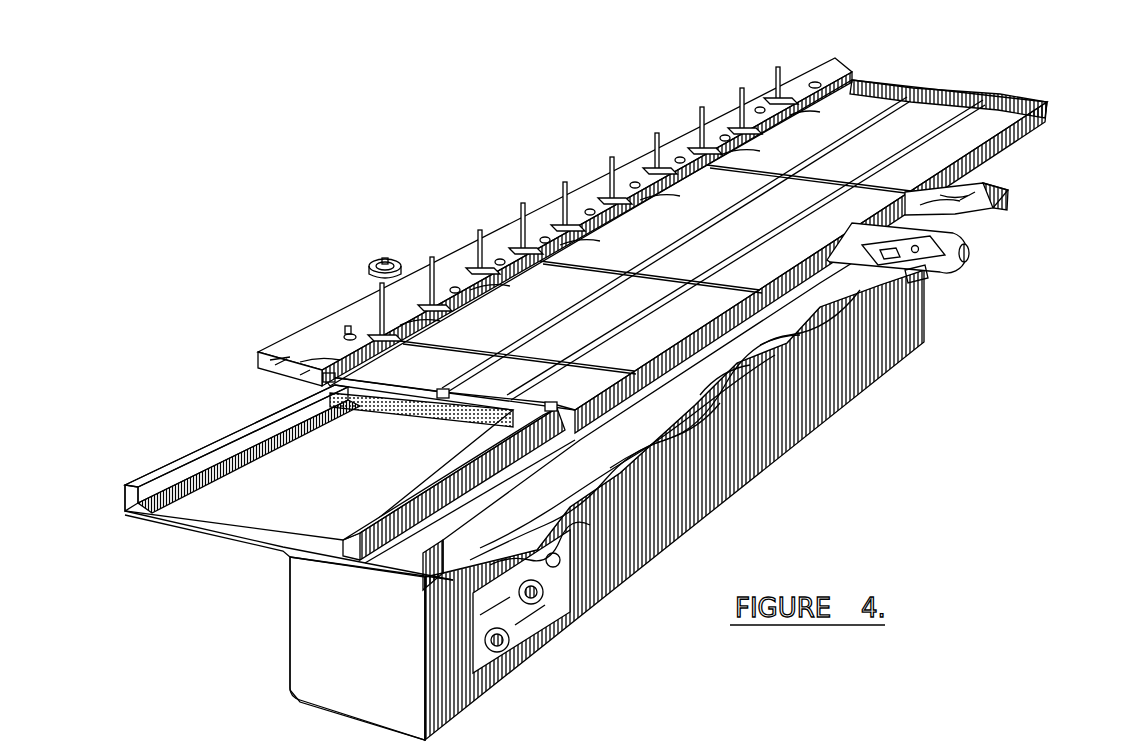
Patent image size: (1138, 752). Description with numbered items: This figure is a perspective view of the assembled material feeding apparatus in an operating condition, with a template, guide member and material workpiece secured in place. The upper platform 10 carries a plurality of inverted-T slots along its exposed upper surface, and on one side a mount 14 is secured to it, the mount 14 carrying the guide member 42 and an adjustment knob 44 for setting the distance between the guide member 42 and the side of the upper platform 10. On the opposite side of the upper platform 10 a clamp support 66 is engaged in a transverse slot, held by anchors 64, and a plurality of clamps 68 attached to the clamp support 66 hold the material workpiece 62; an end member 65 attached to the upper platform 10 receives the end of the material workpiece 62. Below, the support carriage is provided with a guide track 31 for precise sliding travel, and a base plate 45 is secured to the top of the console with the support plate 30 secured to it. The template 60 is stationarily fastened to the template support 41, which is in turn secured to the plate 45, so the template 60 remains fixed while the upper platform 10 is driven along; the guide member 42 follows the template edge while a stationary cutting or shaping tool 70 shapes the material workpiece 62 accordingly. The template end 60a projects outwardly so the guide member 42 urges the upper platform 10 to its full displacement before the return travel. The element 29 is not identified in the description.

The upper platform 10 is at (944, 95).
The mount 14 is at (954, 238).
The abrasive strip 29 is at (293, 417).
The support plate 30 is at (253, 520).
The guide track 31 is at (137, 507).
The template support 41 is at (430, 575).
The guide member 42 is at (925, 272).
The adjustment knob 44 is at (970, 252).
The base plate 45 is at (407, 566).
The template 60 is at (924, 338).
The template end 60a is at (980, 188).
The material workpiece 62 is at (632, 165).
The anchor 64 is at (350, 335).
The end member 65 is at (808, 72).
The clamp support 66 is at (834, 78).
The clamp 68 is at (530, 207).
The cutting or shaping tool 70 is at (383, 262).